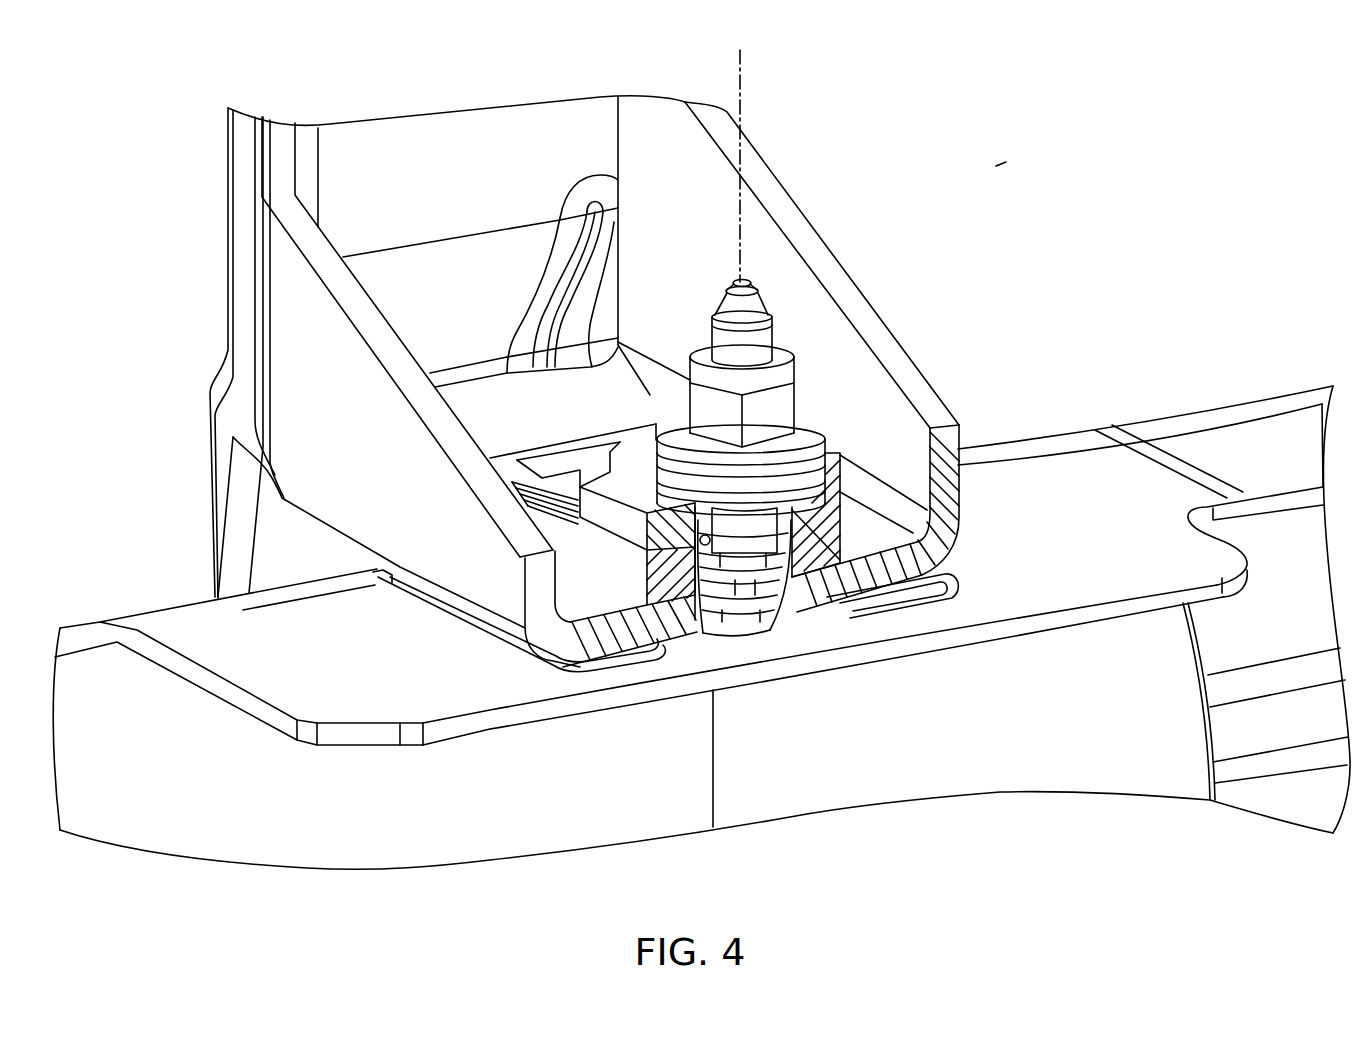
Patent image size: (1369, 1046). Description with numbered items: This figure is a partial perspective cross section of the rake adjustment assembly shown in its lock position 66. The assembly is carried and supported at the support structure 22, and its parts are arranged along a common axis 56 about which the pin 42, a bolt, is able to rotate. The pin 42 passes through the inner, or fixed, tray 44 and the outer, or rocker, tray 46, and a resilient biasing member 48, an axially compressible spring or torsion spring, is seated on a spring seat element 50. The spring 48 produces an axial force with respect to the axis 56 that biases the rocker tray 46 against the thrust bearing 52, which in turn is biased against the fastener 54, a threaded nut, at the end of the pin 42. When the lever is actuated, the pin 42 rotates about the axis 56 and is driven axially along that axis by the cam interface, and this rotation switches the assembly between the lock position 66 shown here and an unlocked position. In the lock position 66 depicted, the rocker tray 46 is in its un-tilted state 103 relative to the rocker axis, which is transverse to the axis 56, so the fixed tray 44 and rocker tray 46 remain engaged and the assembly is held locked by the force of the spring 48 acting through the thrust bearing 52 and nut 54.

The support structure 22 is at (853, 283).
The un-tilted state 103 is at (560, 435).
The axis 56 is at (745, 92).
The lock position 66 is at (1005, 163).
The pin 42 is at (777, 331).
The fastener 54 is at (795, 392).
The thrust bearing 52 is at (827, 430).
The rocker tray 46 is at (832, 492).
The resilient biasing member 48 is at (768, 630).
The spring seat element 50 is at (703, 633).
The inner tray 44 is at (962, 462).